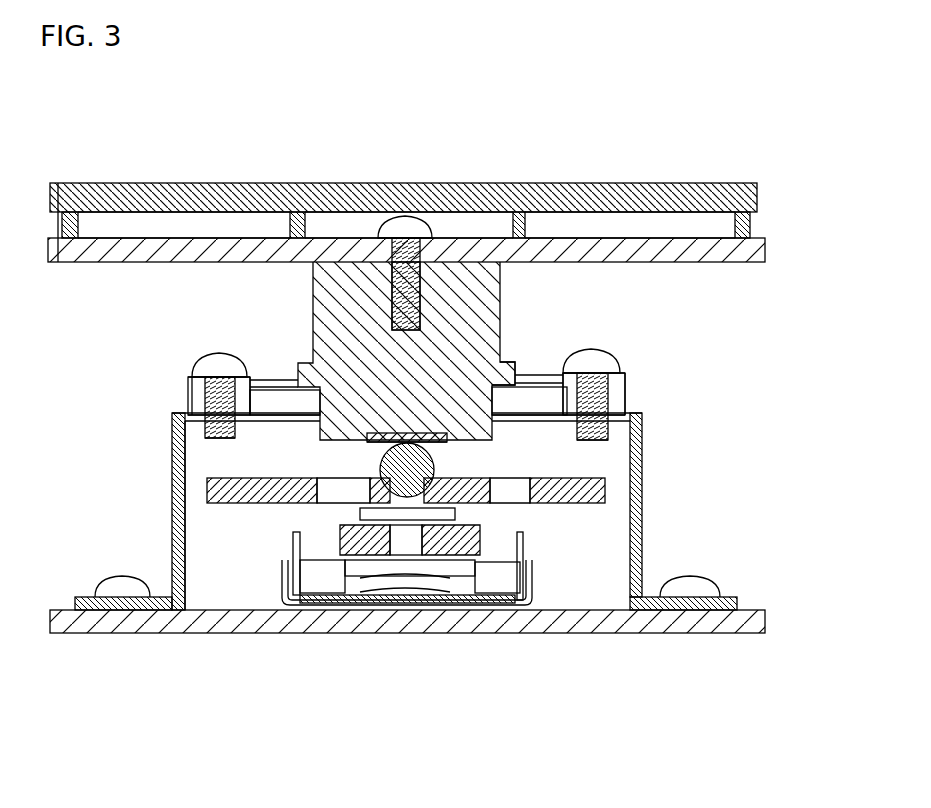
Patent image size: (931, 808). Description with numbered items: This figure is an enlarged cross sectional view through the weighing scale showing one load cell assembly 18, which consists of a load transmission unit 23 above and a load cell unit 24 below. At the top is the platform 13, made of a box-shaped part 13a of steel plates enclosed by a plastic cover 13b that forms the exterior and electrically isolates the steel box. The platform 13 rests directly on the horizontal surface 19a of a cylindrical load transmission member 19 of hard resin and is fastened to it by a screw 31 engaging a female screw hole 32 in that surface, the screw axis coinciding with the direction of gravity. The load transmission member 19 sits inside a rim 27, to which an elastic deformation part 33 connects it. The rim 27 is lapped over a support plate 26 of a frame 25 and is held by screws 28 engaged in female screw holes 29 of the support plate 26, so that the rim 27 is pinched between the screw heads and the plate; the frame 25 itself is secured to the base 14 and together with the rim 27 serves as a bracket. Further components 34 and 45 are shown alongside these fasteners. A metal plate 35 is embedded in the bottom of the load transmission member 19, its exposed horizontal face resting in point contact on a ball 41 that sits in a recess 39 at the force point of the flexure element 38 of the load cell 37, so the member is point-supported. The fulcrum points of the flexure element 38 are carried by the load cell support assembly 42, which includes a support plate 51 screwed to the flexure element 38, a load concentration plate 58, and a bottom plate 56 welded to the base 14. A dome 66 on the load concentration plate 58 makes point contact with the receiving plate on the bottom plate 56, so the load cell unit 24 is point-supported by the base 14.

The platform 13 is at (426, 194).
The box-shaped part 13a is at (640, 238).
The plastic cover 13b is at (590, 185).
The base 14 is at (690, 633).
The load cell assembly 18 is at (185, 292).
The load transmission member 19 is at (313, 298).
The horizontal surface 19a is at (508, 262).
The load transmission unit 23 is at (636, 318).
The load cell unit 24 is at (236, 574).
The frame 25 is at (648, 470).
The support plate 26 is at (527, 425).
The rim 27 is at (188, 390).
The screws 28 is at (219, 353).
The female screw holes 29 is at (236, 440).
The screw 31 is at (406, 216).
The female screw hole 32 is at (421, 328).
The elastic deformation part 33 is at (281, 380).
The holder 34 is at (608, 395).
The metal plate 35 is at (398, 437).
The load cell 37 is at (205, 505).
The flexure element 38 is at (570, 504).
The recess 39 is at (434, 466).
The ball 41 is at (425, 437).
The load cell support assembly 42 is at (497, 610).
The ball holder 45 is at (380, 466).
The support plate 51 is at (520, 556).
The bottom plate 56 is at (290, 575).
The load concentration plate 58 is at (340, 562).
The dome 66 is at (378, 598).